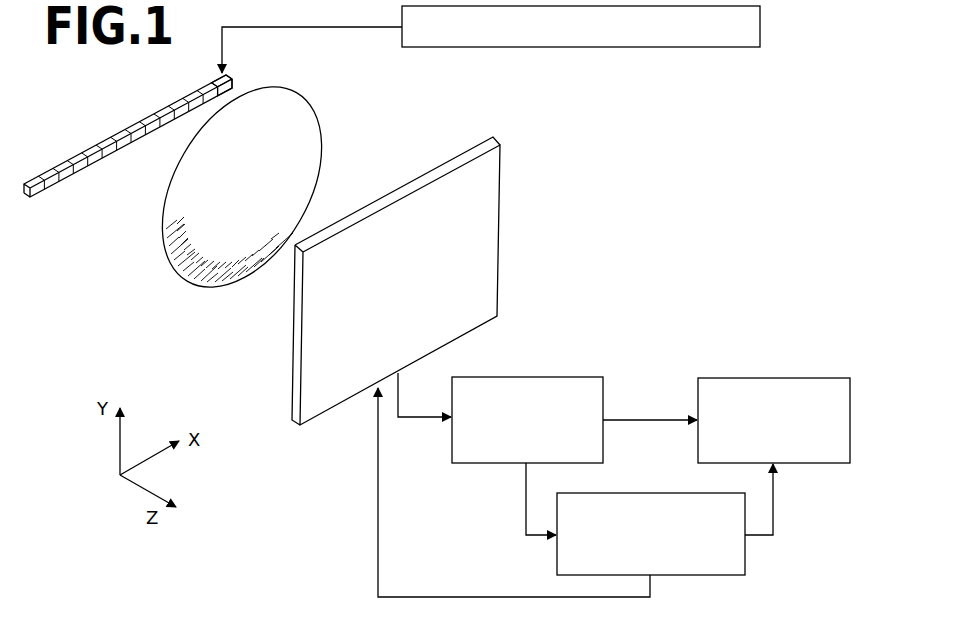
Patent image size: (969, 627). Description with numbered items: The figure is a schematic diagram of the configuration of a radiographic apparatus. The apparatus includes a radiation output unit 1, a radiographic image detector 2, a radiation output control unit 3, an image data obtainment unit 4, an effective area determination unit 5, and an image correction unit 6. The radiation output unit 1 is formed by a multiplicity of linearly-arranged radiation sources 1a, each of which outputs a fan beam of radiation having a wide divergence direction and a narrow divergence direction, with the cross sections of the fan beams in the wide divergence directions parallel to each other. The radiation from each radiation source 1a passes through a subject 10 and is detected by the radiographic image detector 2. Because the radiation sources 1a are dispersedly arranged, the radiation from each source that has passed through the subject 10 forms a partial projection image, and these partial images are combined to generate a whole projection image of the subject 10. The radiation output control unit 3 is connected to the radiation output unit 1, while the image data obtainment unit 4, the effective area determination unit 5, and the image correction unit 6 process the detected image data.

The radiation output unit 1 is at (109, 143).
The radiation source 1a is at (235, 79).
The subject 10 is at (308, 100).
The radiographic image detector 2 is at (472, 143).
The radiation output control unit 3 is at (760, 27).
The image data obtainment unit 4 is at (530, 377).
The effective area determination unit 5 is at (644, 493).
The image correction unit 6 is at (776, 378).